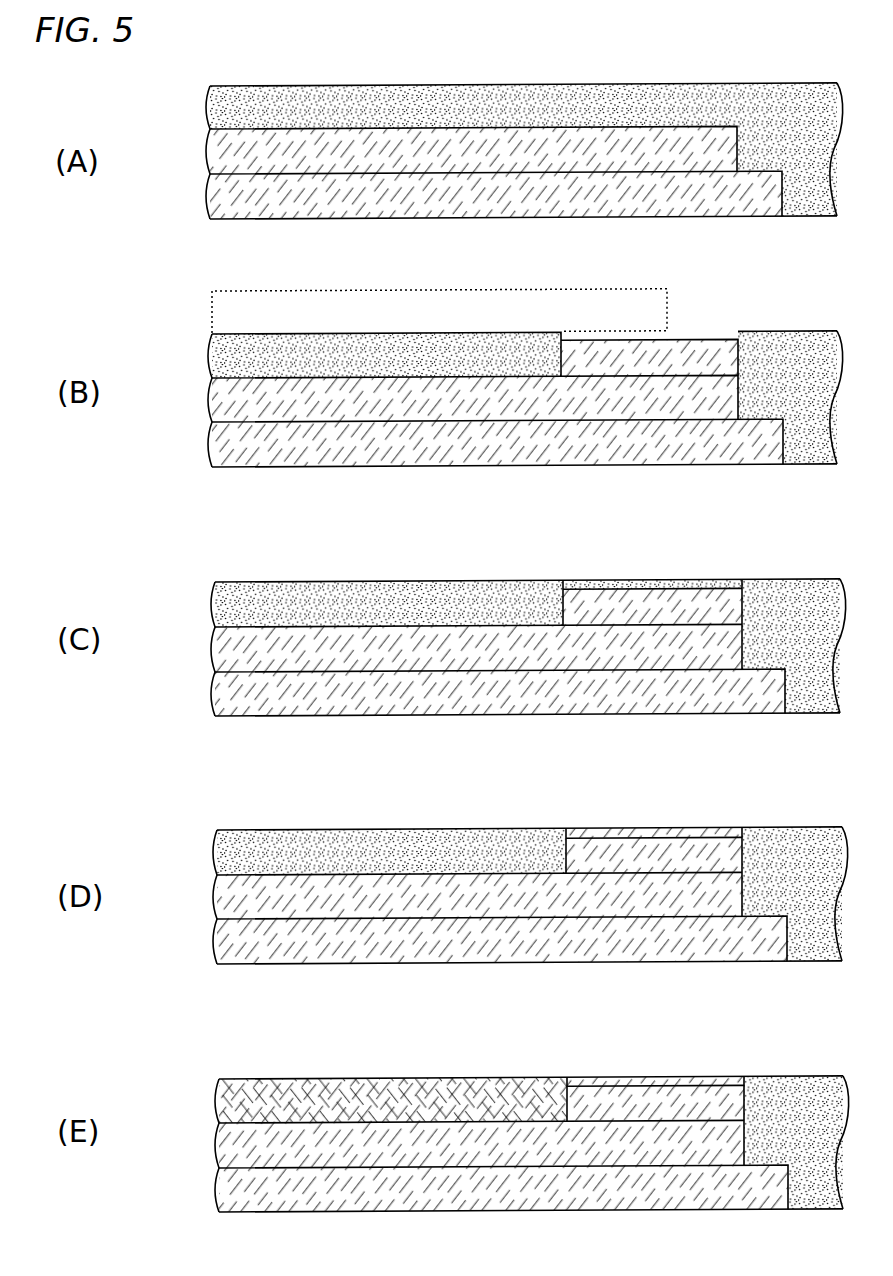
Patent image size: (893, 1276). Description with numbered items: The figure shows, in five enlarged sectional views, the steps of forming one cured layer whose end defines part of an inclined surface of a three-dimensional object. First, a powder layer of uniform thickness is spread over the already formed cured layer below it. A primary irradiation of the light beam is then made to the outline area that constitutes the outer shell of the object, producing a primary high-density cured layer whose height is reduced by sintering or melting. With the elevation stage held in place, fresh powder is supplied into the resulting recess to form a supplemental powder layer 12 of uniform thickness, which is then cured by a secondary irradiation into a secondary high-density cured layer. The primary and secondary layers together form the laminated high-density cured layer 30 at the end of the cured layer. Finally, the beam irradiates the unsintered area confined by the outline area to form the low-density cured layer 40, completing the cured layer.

The supplemental powder layer 12 is at (643, 580).
The high-density cured layer 30 is at (534, 1113).
The low-density cured layer 40 is at (423, 1090).